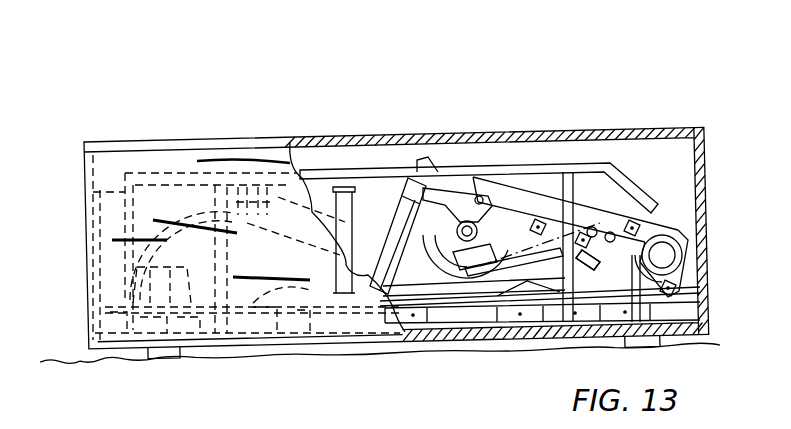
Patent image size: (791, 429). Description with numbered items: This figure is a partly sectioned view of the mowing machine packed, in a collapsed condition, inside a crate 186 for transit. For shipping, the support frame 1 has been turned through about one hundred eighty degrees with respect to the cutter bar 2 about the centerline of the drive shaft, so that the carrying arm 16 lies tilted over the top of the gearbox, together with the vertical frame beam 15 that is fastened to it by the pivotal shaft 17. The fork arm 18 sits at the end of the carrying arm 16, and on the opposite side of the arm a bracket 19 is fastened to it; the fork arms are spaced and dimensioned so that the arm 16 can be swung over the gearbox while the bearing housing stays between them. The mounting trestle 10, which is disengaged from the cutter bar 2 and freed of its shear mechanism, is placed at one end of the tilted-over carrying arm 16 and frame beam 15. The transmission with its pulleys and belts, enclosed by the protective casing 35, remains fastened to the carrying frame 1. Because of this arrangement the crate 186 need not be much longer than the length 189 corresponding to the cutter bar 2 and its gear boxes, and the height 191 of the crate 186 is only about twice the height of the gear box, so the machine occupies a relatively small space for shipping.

The support frame 1 is at (662, 218).
The cutter bar 2 is at (477, 310).
The mounting trestle 10 is at (343, 220).
The vertical frame beam 15 is at (392, 242).
The carrying arm 16 is at (523, 205).
The pivotal shaft 17 is at (508, 158).
The fork arm 18 is at (570, 183).
The bracket 19 is at (108, 220).
The protective casing 35 is at (585, 215).
The crate 186 is at (405, 132).
The length 189 is at (704, 142).
The height 191 is at (756, 349).